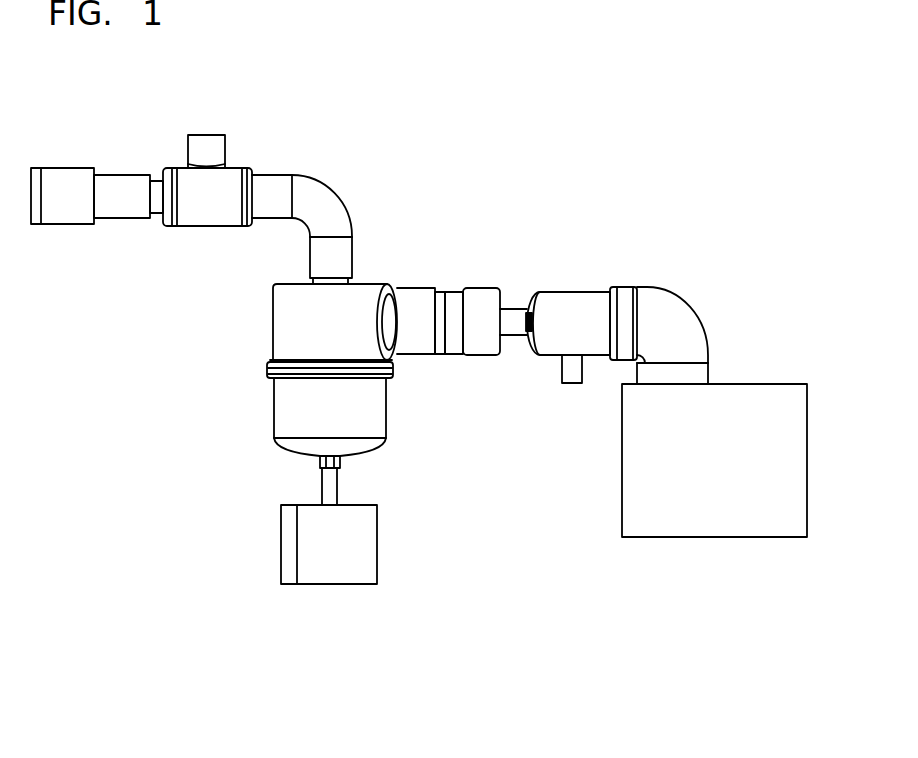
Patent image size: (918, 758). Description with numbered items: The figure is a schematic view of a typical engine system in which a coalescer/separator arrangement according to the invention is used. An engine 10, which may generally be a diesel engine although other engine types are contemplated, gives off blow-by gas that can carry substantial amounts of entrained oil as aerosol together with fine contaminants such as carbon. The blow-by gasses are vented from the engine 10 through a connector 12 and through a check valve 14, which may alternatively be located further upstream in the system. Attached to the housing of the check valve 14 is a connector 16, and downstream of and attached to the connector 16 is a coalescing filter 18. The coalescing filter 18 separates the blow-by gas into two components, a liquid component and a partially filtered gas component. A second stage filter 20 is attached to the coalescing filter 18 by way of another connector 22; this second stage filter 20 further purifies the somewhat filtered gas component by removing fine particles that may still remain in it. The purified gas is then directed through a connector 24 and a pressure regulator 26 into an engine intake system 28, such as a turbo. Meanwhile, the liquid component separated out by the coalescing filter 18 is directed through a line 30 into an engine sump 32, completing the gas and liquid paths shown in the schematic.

The engine 10 is at (752, 383).
The connector 12 is at (685, 307).
The check valve 14 is at (568, 292).
The connector 16 is at (481, 288).
The coalescing filter 18 is at (449, 355).
The second stage filter 20 is at (270, 399).
The connector 22 is at (407, 285).
The connector 24 is at (338, 193).
The pressure regulator 26 is at (238, 163).
The engine intake system 28 is at (67, 168).
The line 30 is at (338, 489).
The engine sump 32 is at (352, 585).